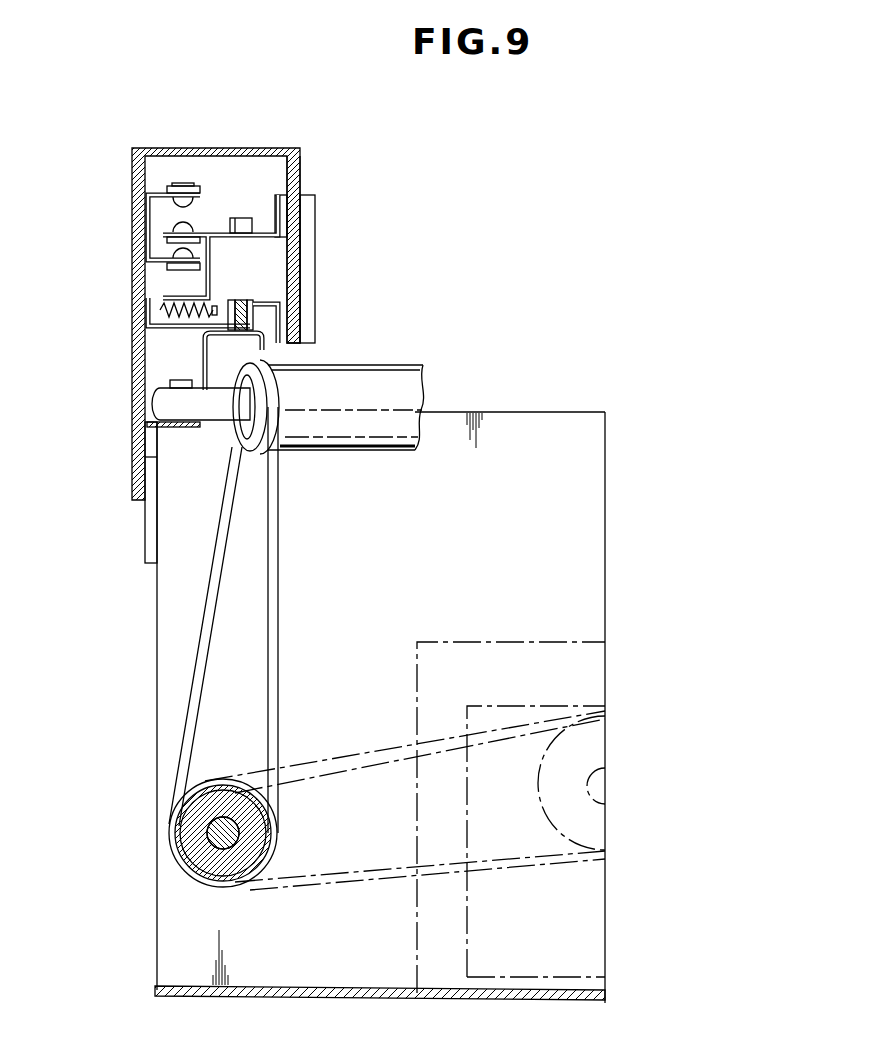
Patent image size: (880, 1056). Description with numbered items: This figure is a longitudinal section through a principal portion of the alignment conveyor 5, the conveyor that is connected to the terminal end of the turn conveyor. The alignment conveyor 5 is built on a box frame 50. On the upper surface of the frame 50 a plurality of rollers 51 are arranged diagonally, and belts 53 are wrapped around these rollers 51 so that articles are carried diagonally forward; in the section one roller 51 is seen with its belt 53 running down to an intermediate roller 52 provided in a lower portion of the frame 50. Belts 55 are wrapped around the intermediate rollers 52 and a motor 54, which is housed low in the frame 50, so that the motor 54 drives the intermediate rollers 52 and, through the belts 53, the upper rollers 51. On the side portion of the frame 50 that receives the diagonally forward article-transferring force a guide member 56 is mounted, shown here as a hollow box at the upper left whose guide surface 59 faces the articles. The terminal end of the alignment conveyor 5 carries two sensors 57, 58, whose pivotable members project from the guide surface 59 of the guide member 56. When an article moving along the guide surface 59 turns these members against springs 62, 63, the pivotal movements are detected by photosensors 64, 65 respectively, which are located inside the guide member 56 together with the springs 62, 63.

The alignment conveyor 5 is at (545, 255).
The box frame 50 is at (172, 590).
The roller 51 is at (388, 386).
The intermediate roller 52 is at (198, 832).
The belt 53 is at (275, 604).
The motor 54 is at (530, 668).
The belt 55 is at (372, 752).
The guide member 56 is at (232, 148).
The sensor 57 is at (351, 269).
The sensor 58 is at (307, 240).
The guide surface 59 is at (300, 170).
The spring 62 is at (158, 281).
The spring 63 is at (190, 313).
The photosensor 64 is at (119, 219).
The photosensor 65 is at (178, 183).